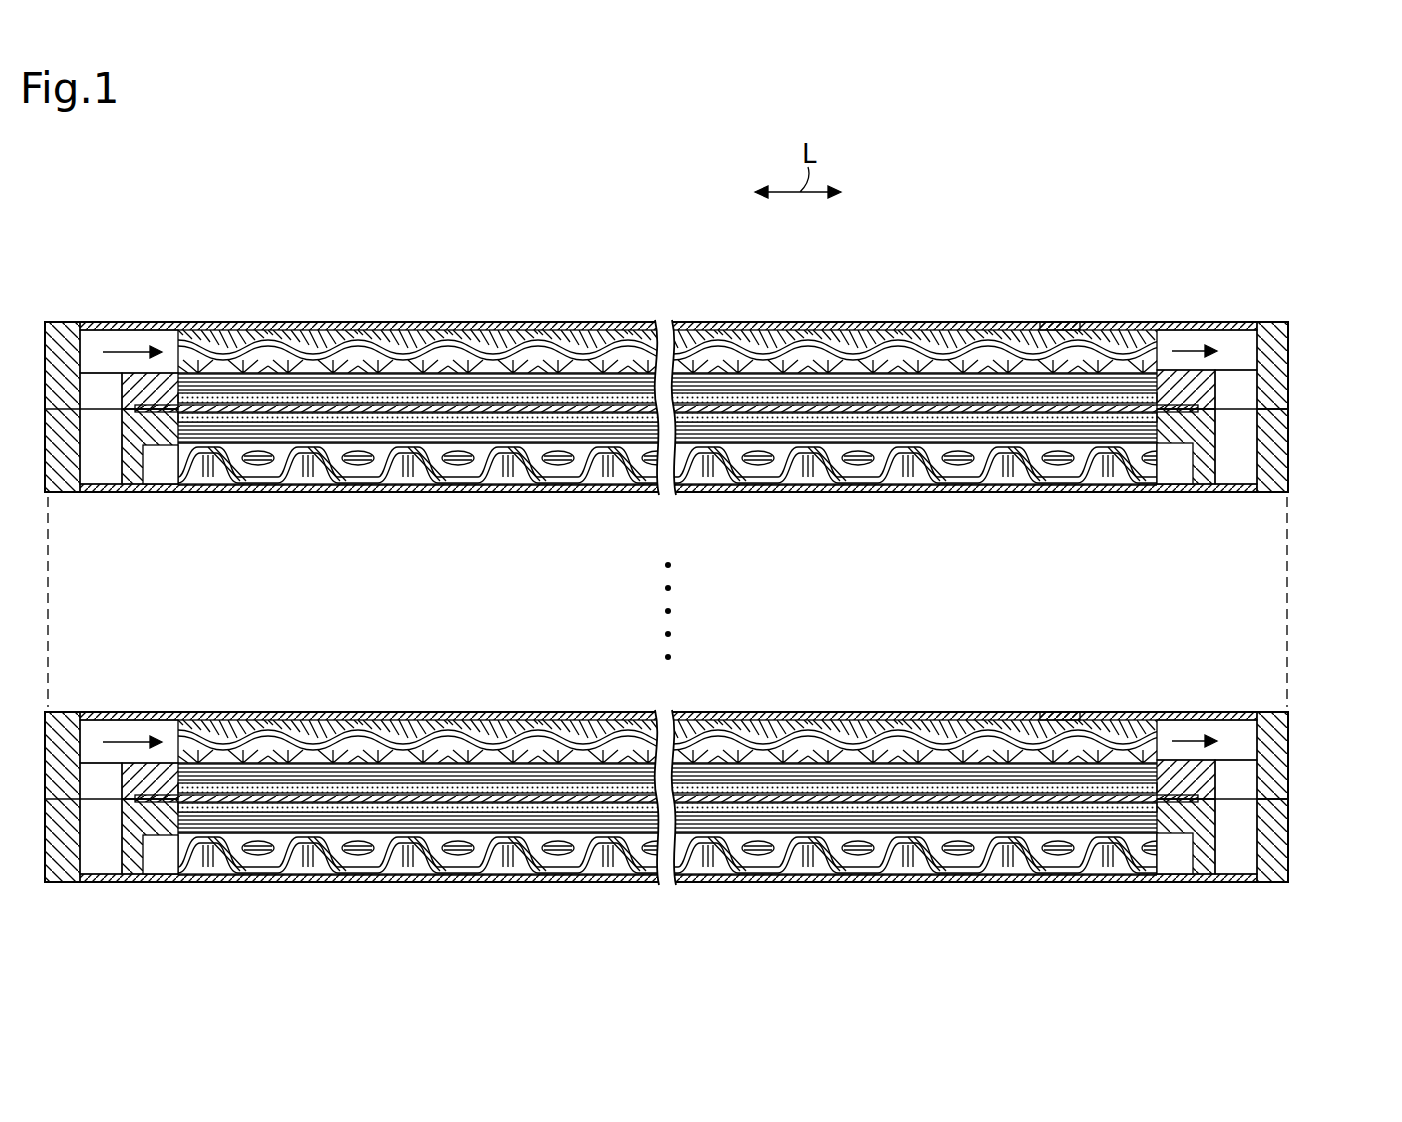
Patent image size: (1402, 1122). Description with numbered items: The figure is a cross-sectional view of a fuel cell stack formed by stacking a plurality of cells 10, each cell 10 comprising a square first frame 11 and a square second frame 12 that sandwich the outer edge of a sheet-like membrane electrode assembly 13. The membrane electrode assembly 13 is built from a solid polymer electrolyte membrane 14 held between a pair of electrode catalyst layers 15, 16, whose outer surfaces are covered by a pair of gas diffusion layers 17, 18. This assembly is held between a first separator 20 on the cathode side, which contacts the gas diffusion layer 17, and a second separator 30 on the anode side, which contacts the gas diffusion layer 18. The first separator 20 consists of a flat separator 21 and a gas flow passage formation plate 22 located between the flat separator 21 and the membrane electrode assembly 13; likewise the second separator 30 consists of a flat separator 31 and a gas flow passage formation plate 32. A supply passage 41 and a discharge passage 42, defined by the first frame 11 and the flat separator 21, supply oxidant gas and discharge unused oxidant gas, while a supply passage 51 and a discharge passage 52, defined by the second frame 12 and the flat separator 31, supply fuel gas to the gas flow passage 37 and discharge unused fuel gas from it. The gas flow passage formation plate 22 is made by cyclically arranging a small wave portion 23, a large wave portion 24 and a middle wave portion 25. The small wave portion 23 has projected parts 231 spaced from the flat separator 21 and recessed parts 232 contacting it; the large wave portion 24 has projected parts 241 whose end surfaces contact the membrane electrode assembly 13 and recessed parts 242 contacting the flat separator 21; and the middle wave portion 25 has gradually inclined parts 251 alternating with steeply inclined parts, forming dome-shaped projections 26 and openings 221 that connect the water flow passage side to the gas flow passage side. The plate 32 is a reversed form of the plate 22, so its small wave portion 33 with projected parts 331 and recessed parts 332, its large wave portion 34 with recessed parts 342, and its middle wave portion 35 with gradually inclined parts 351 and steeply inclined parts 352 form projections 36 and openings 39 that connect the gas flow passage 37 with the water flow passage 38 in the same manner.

The cell 10 is at (1345, 328).
The first frame 11 is at (1288, 447).
The second frame 12 is at (1288, 372).
The membrane electrode assembly 13 is at (666, 336).
The solid polymer electrolyte membrane 14 is at (928, 404).
The electrode catalyst layer 15 is at (890, 417).
The electrode catalyst layer 16 is at (972, 392).
The gas diffusion layer 17 is at (1042, 272).
The gas diffusion layer 18 is at (1018, 383).
The first separator 20 is at (914, 519).
The flat separator 21 is at (780, 492).
The gas flow passage formation plate 22 is at (847, 468).
The small wave portion 23 is at (299, 519).
The projected part 231 is at (343, 470).
The recessed part 232 is at (380, 498).
The large wave portion 24 is at (490, 519).
The projected part 241 is at (520, 498).
The recessed part 242 is at (440, 462).
The middle wave portion 25 is at (609, 510).
The gradually inclined part 251 is at (616, 455).
The projection 26 is at (1070, 435).
The opening 221 is at (255, 440).
The second separator 30 is at (726, 301).
The flat separator 31 is at (694, 340).
The gas flow passage formation plate 32 is at (750, 320).
The small wave portion 33 is at (277, 301).
The projected part 331 is at (305, 342).
The recessed part 332 is at (347, 320).
The large wave portion 34 is at (407, 301).
The recessed part 342 is at (395, 350).
The middle wave portion 35 is at (520, 301).
The gradually inclined part 351 is at (483, 342).
The steeply inclined part 352 is at (557, 320).
The projection 36 is at (227, 318).
The gas flow passage 37 is at (600, 314).
The water flow passage 38 is at (770, 322).
The opening 39 is at (1060, 322).
The supply passage 41 is at (1173, 467).
The discharge passage 42 is at (157, 467).
The supply passage 51 is at (93, 338).
The discharge passage 52 is at (1237, 338).